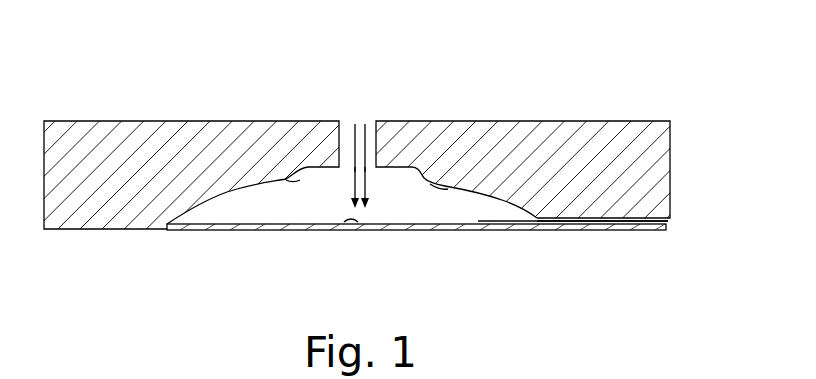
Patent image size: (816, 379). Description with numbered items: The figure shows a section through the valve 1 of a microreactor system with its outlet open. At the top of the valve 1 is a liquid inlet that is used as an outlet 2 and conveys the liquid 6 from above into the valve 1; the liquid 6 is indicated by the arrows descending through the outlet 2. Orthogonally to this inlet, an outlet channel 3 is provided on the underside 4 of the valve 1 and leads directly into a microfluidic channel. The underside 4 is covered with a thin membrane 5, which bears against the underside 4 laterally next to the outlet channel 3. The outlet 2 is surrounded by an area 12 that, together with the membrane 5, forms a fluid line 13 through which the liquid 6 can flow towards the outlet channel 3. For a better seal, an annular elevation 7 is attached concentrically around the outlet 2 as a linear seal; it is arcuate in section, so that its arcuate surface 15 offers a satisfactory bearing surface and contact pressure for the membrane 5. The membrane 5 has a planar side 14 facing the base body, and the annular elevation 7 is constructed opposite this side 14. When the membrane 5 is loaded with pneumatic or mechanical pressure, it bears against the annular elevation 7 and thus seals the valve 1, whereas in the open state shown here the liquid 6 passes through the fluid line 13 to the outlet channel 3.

The valve 1 is at (579, 92).
The outlet 2 is at (367, 121).
The outlet channel 3 is at (616, 222).
The underside 4 is at (668, 225).
The membrane 5 is at (457, 226).
The liquid 6 is at (367, 180).
The annular elevation 7 is at (284, 181).
The area 12 is at (168, 225).
The fluid line 13 is at (435, 199).
The planar side 14 is at (340, 218).
The arcuate surface 15 is at (446, 193).